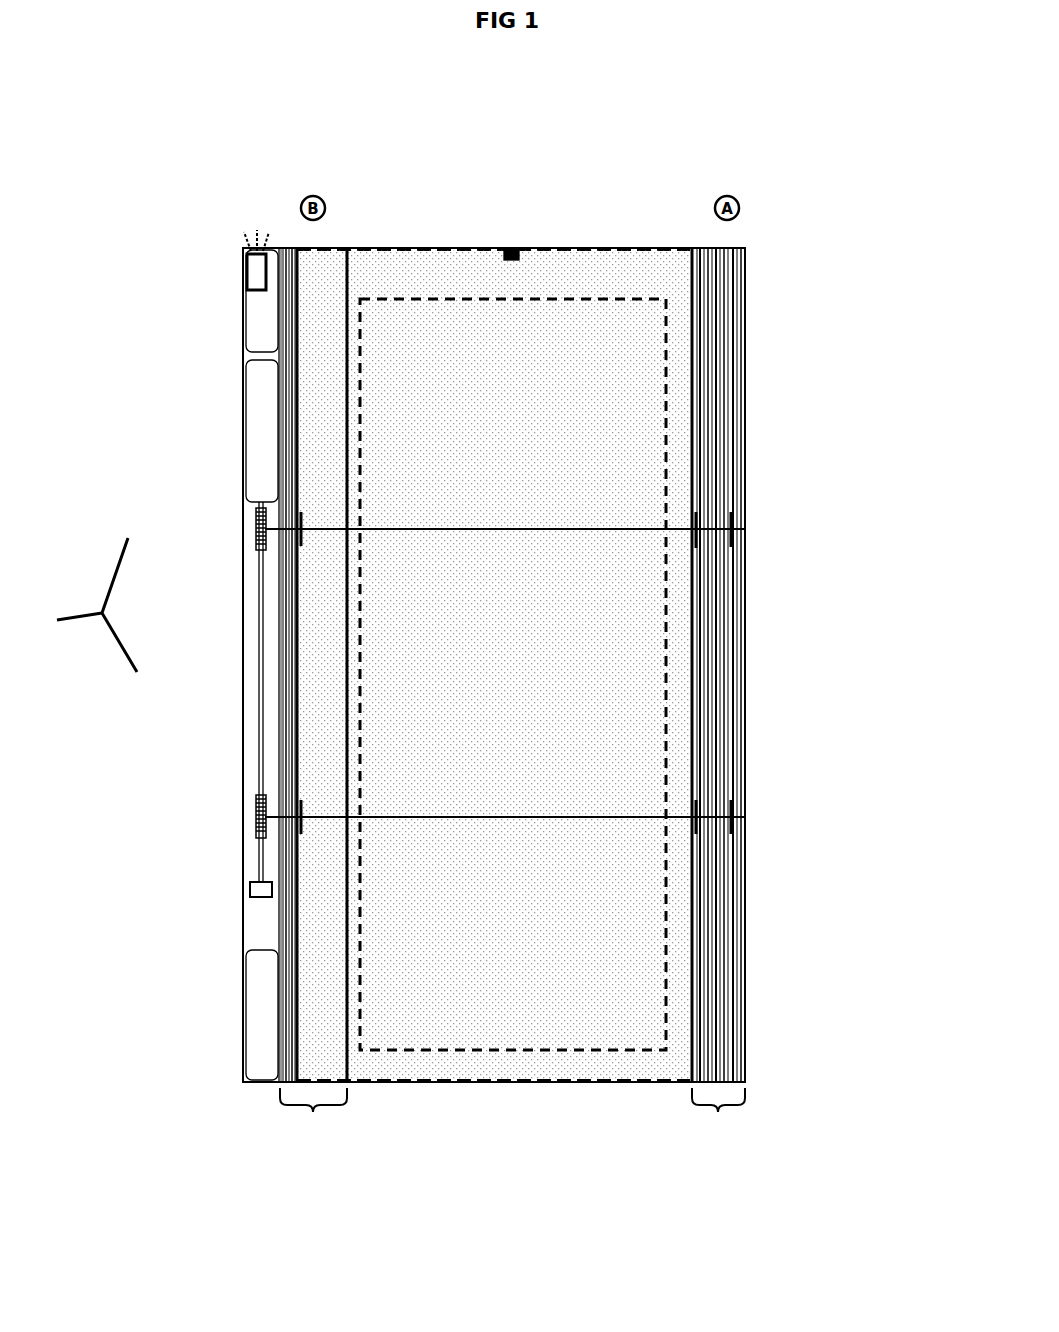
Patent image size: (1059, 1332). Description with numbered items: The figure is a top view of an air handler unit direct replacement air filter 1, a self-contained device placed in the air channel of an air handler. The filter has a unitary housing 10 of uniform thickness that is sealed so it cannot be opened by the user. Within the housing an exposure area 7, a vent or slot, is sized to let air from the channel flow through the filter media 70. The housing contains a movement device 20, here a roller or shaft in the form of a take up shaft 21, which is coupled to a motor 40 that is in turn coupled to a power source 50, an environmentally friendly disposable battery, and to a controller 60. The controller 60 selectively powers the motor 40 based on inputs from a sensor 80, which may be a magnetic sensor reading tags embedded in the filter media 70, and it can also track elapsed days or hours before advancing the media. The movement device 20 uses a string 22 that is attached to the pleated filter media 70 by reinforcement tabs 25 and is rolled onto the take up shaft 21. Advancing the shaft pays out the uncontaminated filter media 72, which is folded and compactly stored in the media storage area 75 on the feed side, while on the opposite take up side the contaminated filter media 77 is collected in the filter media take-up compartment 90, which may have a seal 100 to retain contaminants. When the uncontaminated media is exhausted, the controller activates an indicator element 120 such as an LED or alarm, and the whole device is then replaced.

The air handler unit direct replacement air filter 1 is at (417, 196).
The exposure area 7 is at (569, 295).
The unitary housing 10 is at (458, 1083).
The movement device 20 is at (627, 582).
The take up shaft 21 is at (261, 643).
The string 22 is at (251, 532).
The reinforcement tabs 25 is at (694, 556).
The motor 40 is at (257, 430).
The power source 50 is at (253, 975).
The controller 60 is at (255, 322).
The filter media 70 is at (560, 686).
The uncontaminated filter media 72 is at (708, 293).
The media storage area 75 is at (718, 1112).
The contaminated filter media 77 is at (287, 262).
The sensor 80 is at (510, 240).
The filter media take-up compartment 90 is at (313, 1112).
The seal 100 is at (345, 245).
The indicator element 120 is at (243, 266).